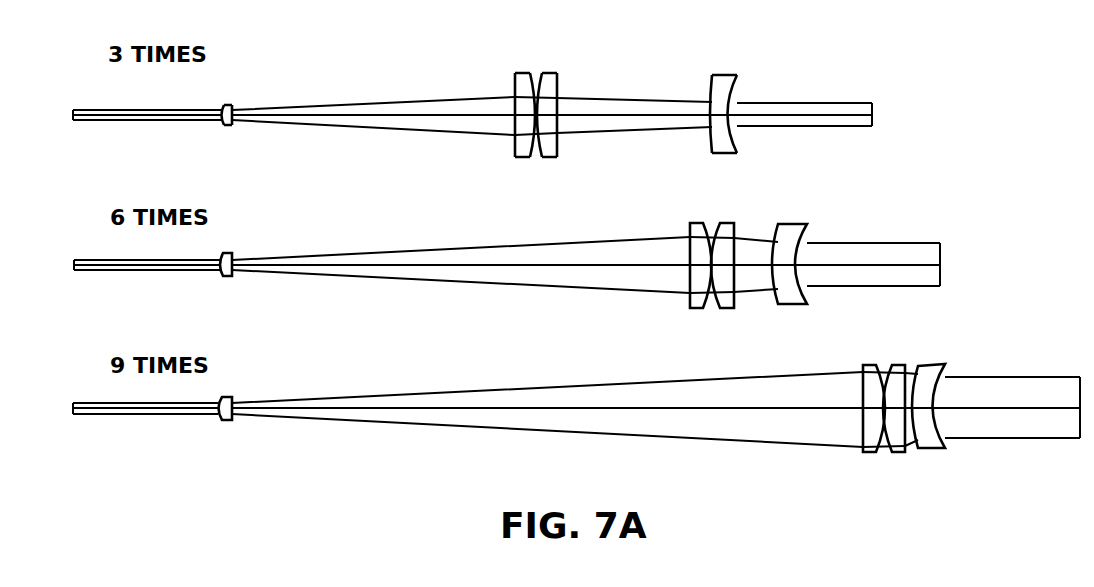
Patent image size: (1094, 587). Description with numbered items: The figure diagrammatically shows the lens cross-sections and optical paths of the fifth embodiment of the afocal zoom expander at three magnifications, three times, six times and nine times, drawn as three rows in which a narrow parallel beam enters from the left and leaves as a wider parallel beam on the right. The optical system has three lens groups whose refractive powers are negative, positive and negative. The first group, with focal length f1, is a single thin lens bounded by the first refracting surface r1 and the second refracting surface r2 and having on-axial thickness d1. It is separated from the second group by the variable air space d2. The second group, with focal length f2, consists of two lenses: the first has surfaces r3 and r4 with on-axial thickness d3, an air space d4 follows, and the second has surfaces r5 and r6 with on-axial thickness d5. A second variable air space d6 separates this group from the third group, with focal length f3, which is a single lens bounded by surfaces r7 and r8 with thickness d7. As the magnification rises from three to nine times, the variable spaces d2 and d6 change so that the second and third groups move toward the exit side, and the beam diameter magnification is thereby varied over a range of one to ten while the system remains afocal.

The focal length of first lens group f1 is at (231, 108).
The focal length of second lens group f2 is at (541, 113).
The focal length of third lens group f3 is at (725, 103).
The on-axial thickness of first lens d1 is at (232, 108).
The variable air space between first and second groups d2 is at (373, 109).
The on-axial thickness of first lens of second group d3 is at (527, 108).
The air space between lenses of second group d4 is at (538, 112).
The on-axial thickness of second lens of second group d5 is at (547, 112).
The variable air space between second and third groups d6 is at (634, 107).
The on-axial thickness of third lens d7 is at (721, 112).
The curvature radius of first refracting surface r1 is at (222, 124).
The curvature radius of second refracting surface r2 is at (232, 124).
The curvature radius of third refracting surface r3 is at (516, 145).
The curvature radius of fourth refracting surface r4 is at (533, 155).
The curvature radius of fifth refracting surface r5 is at (543, 155).
The curvature radius of sixth refracting surface r6 is at (558, 145).
The curvature radius of seventh refracting surface r7 is at (712, 145).
The curvature radius of eighth refracting surface r8 is at (738, 147).